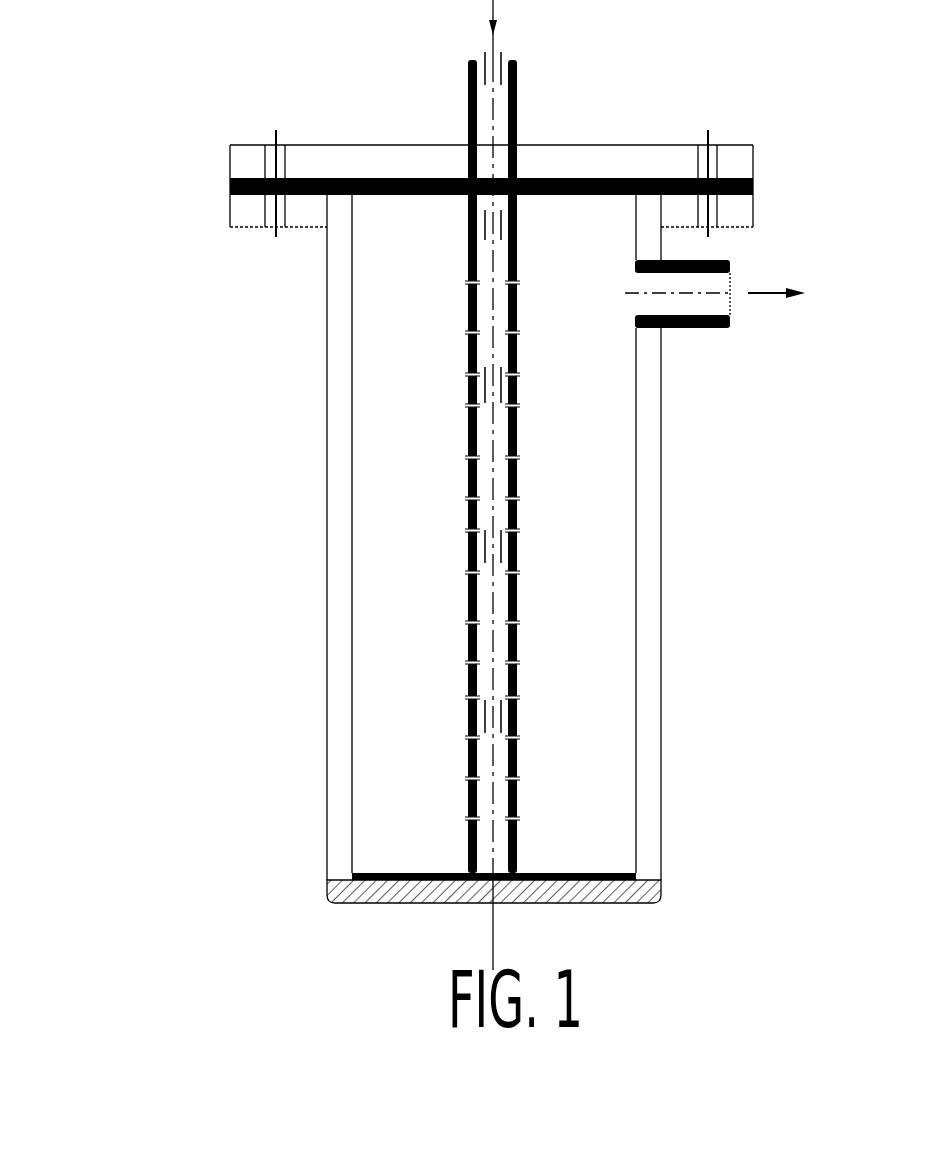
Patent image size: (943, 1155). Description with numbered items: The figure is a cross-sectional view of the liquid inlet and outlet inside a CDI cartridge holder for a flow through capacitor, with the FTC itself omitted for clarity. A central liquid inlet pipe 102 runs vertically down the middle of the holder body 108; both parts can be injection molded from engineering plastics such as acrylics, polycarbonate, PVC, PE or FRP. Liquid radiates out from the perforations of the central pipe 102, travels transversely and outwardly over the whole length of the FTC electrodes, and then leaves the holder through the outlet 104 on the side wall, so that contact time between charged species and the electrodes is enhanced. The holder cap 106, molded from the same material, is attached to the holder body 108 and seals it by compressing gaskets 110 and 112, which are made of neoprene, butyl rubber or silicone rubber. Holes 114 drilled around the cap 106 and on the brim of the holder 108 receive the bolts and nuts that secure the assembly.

The liquid inlet pipe 102 is at (544, 87).
The outlet 104 is at (700, 356).
The holder cap 106 is at (691, 127).
The holder body 108 is at (287, 507).
The gasket 110 is at (633, 849).
The gasket 112 is at (186, 202).
The holes 114 is at (250, 113).